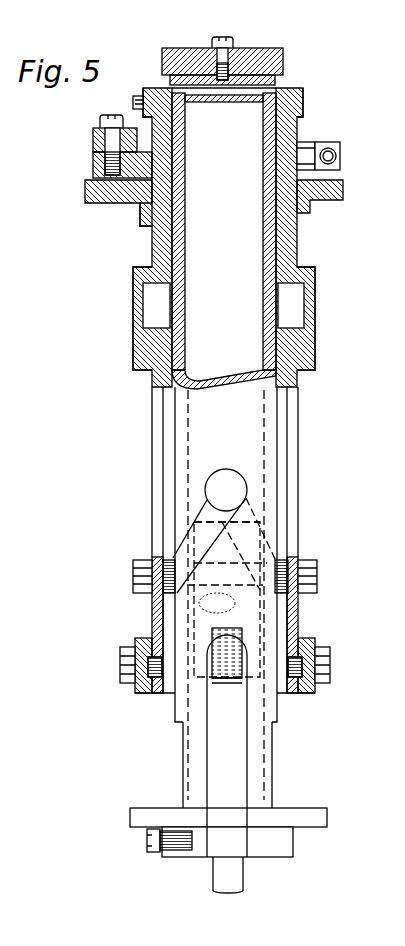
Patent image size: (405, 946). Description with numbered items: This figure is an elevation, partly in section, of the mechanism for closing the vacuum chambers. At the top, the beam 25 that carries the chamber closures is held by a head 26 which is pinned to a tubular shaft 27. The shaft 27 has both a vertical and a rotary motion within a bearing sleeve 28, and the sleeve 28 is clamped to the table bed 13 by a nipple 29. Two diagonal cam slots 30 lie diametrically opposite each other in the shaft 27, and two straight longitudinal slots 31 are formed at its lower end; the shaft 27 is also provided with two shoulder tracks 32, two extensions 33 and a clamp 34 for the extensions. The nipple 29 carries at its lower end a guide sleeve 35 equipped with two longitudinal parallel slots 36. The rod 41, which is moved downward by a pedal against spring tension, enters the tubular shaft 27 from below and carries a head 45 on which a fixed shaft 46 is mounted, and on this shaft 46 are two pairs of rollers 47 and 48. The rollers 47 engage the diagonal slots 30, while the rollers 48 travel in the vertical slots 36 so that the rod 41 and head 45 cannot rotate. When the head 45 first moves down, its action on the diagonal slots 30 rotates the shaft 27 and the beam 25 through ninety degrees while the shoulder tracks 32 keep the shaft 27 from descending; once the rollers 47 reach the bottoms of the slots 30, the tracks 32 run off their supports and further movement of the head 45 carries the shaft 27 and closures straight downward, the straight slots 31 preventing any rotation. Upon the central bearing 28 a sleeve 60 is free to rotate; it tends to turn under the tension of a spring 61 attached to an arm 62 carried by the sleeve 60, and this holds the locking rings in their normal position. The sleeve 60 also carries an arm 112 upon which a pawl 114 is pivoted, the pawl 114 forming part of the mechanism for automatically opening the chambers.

The table bed 13 is at (343, 196).
The beam 25 is at (229, 48).
The head 26 is at (283, 58).
The tubular shaft 27 is at (305, 305).
The bearing sleeve 28 is at (288, 210).
The nipple 29 is at (317, 270).
The diagonal cam slots 30 is at (188, 518).
The straight longitudinal slots 31 is at (247, 703).
The shoulder tracks 32 is at (175, 724).
The extensions 33 is at (183, 788).
The clamp 34 is at (297, 847).
The guide sleeve 35 is at (298, 380).
The longitudinal parallel slots 36 is at (153, 437).
The rod 41 is at (243, 885).
The head 45 is at (207, 535).
The fixed shaft 46 is at (233, 577).
The rollers 47 is at (278, 563).
The rollers 48 is at (300, 574).
The sleeve 60 is at (303, 130).
The spring 61 is at (341, 154).
The arm 62 is at (312, 146).
The arm 112 is at (98, 167).
The pawl 114 is at (93, 142).